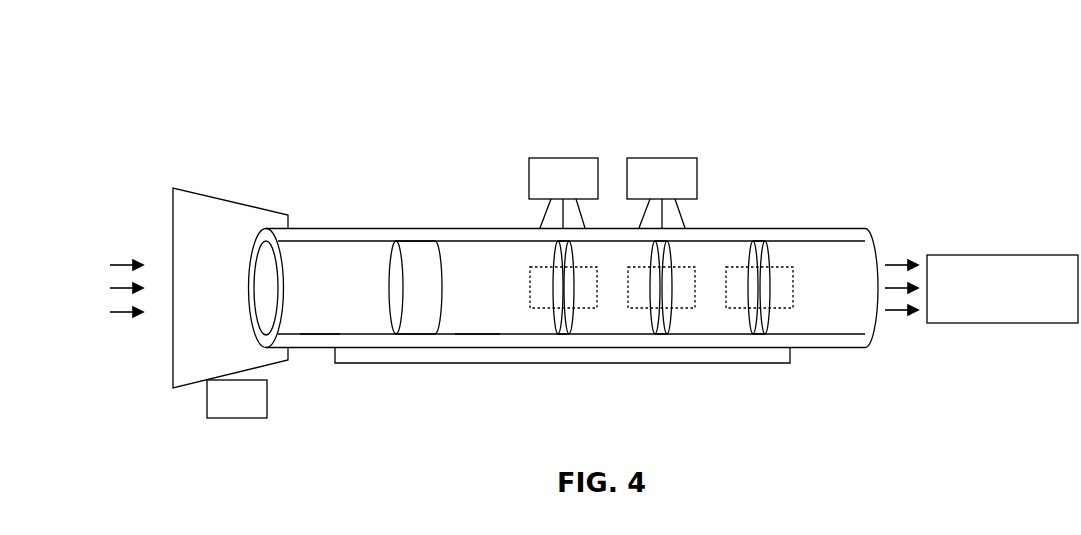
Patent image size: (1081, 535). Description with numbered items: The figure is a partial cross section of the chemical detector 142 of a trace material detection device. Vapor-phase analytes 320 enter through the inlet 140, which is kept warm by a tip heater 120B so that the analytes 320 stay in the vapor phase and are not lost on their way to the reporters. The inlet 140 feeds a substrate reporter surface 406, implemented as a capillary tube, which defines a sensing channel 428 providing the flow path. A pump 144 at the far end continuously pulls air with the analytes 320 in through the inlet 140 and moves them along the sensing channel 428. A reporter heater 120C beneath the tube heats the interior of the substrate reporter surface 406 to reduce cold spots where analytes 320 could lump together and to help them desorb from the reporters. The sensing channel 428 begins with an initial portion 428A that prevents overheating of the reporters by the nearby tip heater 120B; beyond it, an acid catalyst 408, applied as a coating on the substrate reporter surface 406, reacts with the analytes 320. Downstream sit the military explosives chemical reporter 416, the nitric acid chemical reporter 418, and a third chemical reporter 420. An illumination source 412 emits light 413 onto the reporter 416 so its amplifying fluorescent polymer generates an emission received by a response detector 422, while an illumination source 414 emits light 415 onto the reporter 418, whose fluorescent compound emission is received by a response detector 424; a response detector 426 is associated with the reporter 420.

The chemical detector 142 is at (404, 85).
The vapor-phase analytes 320 is at (153, 241).
The inlet 140 is at (208, 210).
The tip heater 120B is at (237, 420).
The substrate reporter surface 406 is at (322, 227).
The initial portion 428A is at (323, 322).
The sensing channel 428 is at (477, 323).
The reporter heater 120C is at (385, 355).
The acid catalyst 408 is at (412, 247).
The illumination source 412 is at (537, 179).
The light 413 is at (526, 199).
The illumination source 414 is at (675, 179).
The light 415 is at (703, 199).
The military explosives chemical reporter 416 is at (563, 328).
The nitric acid chemical reporter 418 is at (660, 327).
The chemical reporter 420 is at (758, 327).
The response detector 422 is at (545, 298).
The response detector 424 is at (643, 300).
The response detector 426 is at (742, 300).
The pump 144 is at (988, 255).